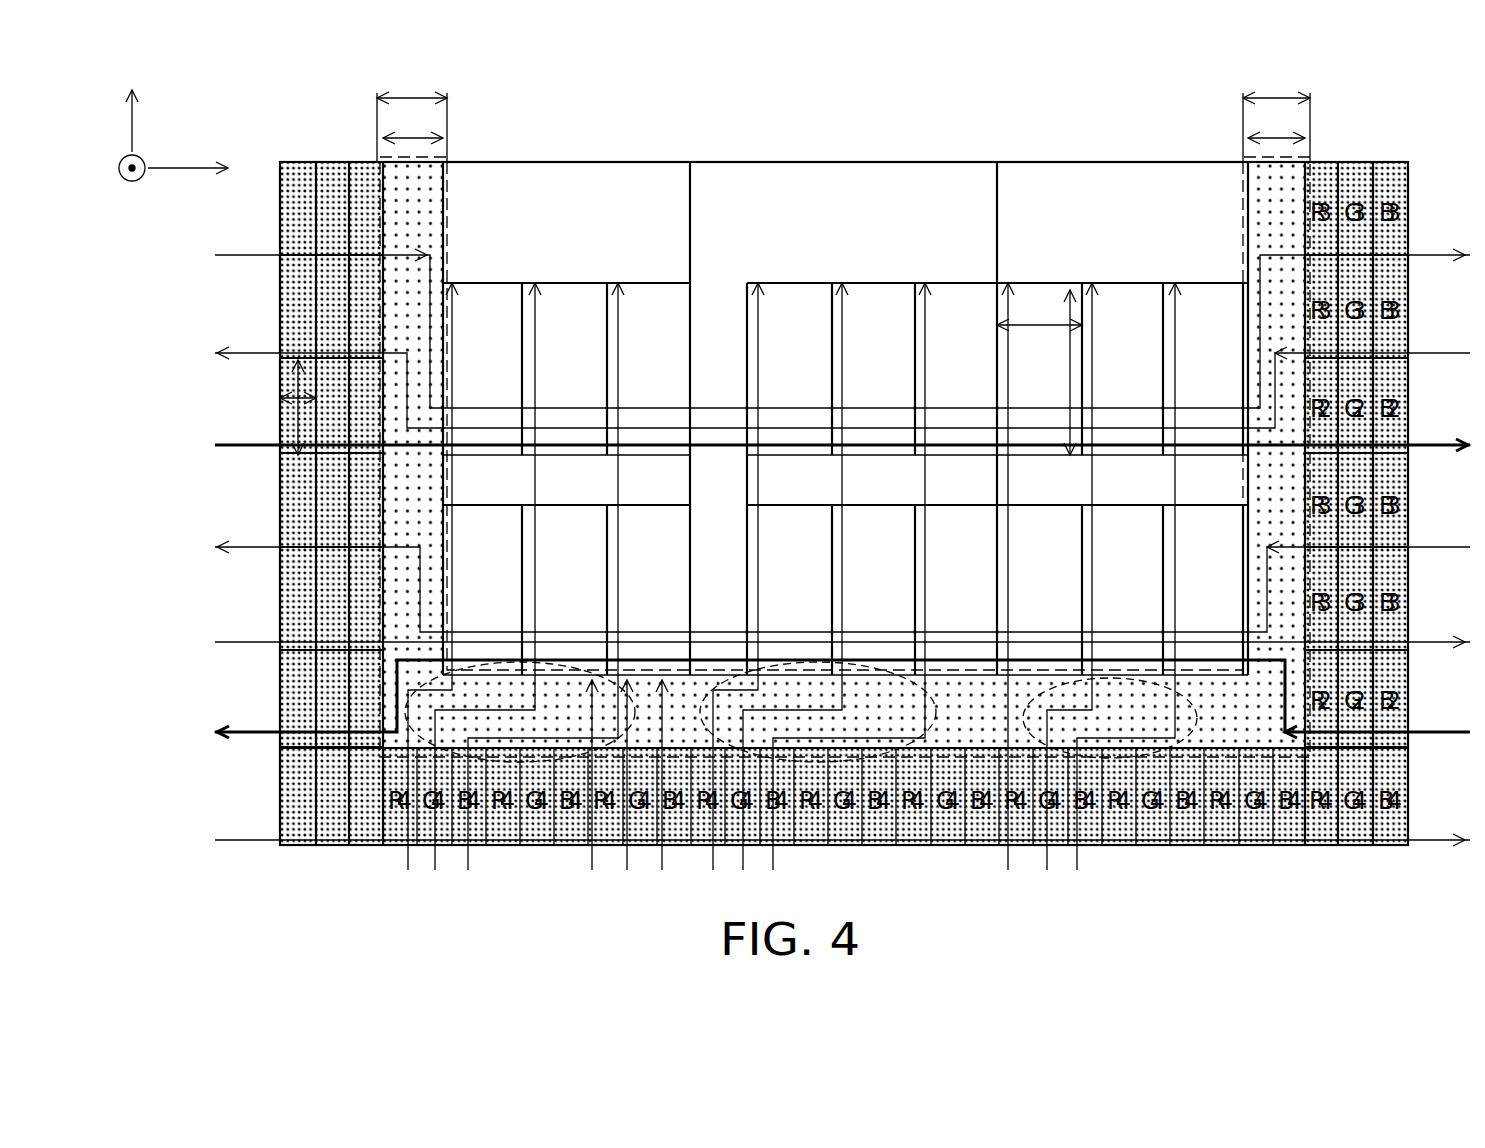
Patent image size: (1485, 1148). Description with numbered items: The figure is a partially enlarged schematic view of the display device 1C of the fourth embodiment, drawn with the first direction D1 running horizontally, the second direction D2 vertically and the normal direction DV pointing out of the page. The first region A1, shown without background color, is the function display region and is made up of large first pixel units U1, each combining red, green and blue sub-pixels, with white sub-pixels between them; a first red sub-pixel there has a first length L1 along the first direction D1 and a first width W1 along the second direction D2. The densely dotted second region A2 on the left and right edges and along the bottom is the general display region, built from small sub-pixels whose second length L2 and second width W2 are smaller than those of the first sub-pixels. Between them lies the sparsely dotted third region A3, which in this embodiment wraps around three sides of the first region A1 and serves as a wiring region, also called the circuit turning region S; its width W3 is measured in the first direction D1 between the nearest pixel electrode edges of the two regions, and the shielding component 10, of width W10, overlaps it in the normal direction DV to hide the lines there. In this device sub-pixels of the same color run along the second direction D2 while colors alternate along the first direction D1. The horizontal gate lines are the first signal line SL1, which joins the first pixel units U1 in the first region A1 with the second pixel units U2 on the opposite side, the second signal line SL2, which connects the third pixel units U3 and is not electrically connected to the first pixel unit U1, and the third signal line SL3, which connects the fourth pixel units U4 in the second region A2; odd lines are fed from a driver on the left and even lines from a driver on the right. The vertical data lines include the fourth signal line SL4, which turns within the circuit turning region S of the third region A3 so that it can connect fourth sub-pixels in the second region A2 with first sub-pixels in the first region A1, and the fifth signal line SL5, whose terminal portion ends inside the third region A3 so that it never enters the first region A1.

The display device 1C is at (1465, 925).
The shielding component 10 is at (446, 186).
The first region A1 is at (1038, 158).
The second region A2 is at (336, 158).
The third region A3 is at (438, 158).
The first signal line SL1 is at (784, 590).
The second signal line SL2 is at (784, 450).
The third signal line SL3 is at (784, 841).
The fourth signal line SL4 is at (780, 594).
The fifth signal line SL5 is at (617, 793).
The circuit turning region S is at (538, 762).
The first width W1 is at (1054, 372).
The second width W2 is at (290, 432).
The width of the third region W3 is at (844, 125).
The width of the shielding component W10 is at (843, 113).
The first length L1 is at (1039, 311).
The second length L2 is at (293, 376).
The first pixel unit U1 is at (572, 138).
The second pixel unit U2 is at (692, 138).
The third pixel unit U3 is at (837, 138).
The fourth pixel unit U4 is at (957, 138).
The normal direction DV is at (132, 188).
The first direction D1 is at (204, 169).
The second direction D2 is at (150, 103).